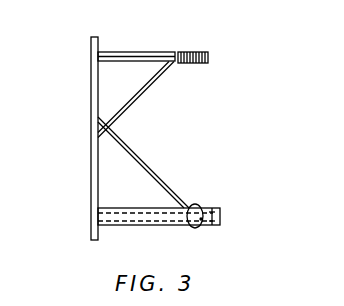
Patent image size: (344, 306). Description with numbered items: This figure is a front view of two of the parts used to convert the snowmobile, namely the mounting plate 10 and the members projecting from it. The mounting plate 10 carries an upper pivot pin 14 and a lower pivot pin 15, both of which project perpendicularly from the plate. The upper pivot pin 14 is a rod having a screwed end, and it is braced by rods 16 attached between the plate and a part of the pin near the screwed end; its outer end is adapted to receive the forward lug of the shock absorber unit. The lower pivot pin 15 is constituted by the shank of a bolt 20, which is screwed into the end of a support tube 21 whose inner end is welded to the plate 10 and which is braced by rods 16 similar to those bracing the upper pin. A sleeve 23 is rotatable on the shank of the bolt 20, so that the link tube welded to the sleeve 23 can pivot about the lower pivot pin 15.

The mounting plate 10 is at (92, 83).
The upper pivot pin 14 is at (181, 54).
The rods 16 is at (135, 153).
The support tube 21 is at (158, 226).
The bolt 20 is at (223, 218).
The sleeve 23 is at (202, 207).
The lower pivot pin 15 is at (203, 219).